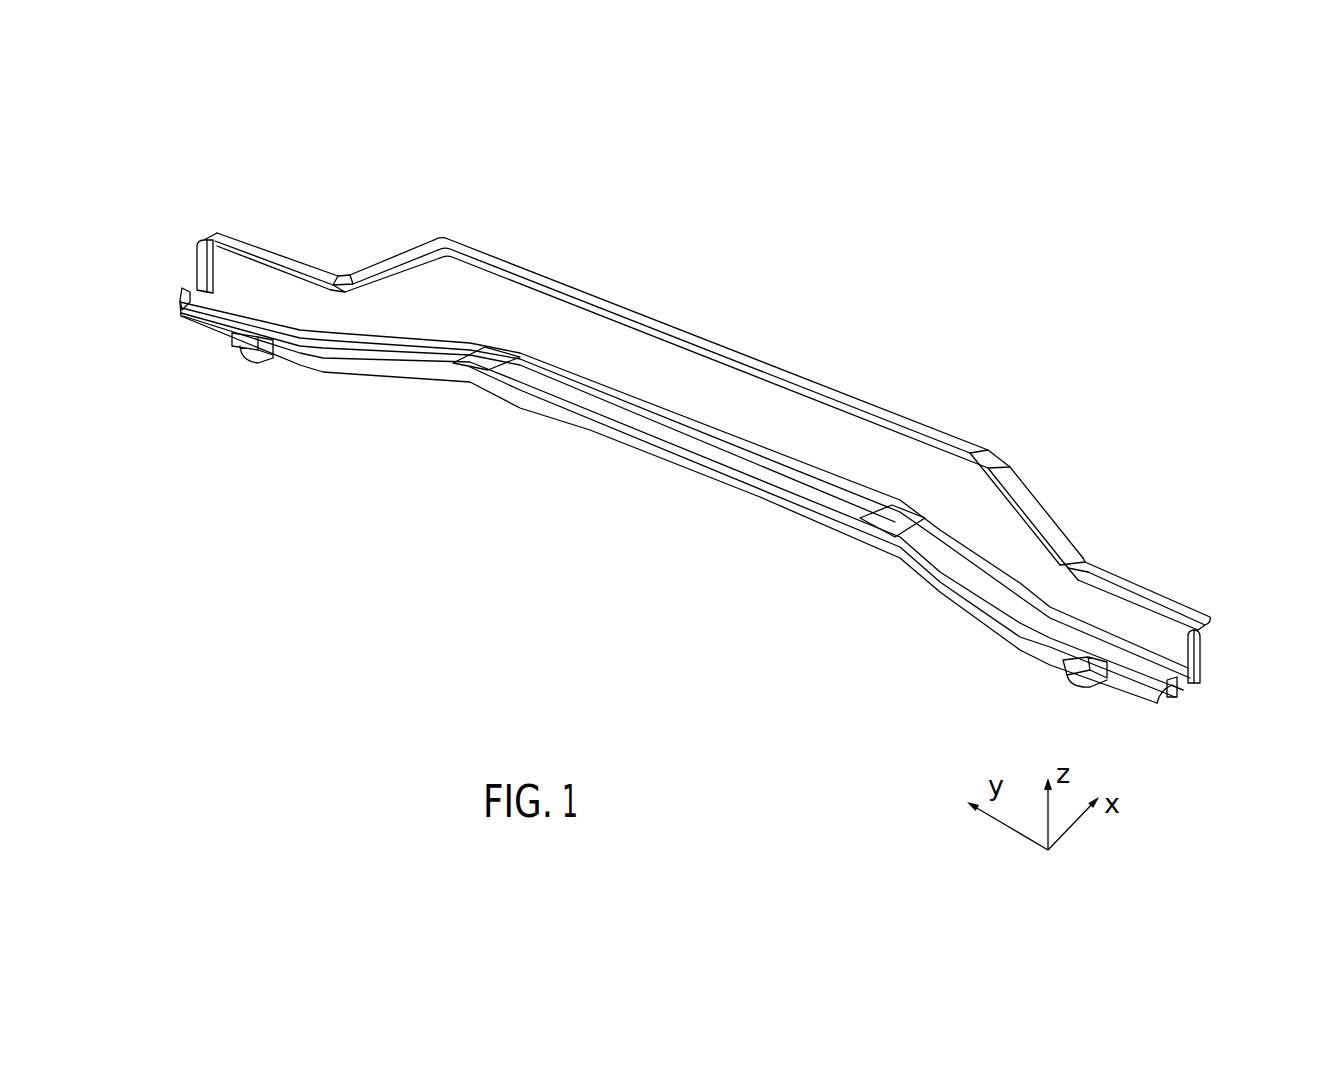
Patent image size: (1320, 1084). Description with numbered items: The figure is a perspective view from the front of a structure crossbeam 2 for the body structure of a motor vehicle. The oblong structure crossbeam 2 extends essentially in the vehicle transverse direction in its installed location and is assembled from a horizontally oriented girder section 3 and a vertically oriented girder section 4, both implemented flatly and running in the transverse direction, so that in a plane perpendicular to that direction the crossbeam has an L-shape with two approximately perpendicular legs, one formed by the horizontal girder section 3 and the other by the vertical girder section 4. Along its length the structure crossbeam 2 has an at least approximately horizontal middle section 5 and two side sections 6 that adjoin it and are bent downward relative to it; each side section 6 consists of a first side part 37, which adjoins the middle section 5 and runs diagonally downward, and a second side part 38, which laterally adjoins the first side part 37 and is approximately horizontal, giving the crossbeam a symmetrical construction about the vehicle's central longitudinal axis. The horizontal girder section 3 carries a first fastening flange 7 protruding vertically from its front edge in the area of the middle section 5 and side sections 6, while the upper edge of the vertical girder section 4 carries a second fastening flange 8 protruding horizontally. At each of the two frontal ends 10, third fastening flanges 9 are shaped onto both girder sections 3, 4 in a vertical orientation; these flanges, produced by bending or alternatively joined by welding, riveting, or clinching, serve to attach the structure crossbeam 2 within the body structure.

The structure crossbeam 2 is at (706, 276).
The horizontal girder section 3 is at (667, 433).
The vertical girder section 4 is at (783, 410).
The middle section 5 is at (729, 428).
The side sections 6 is at (378, 282).
The first fastening flange 7 is at (528, 405).
The second fastening flange 8 is at (523, 268).
The third fastening flanges 9 is at (182, 307).
The frontal ends 10 is at (213, 240).
The first side part 37 is at (407, 255).
The second side part 38 is at (263, 248).